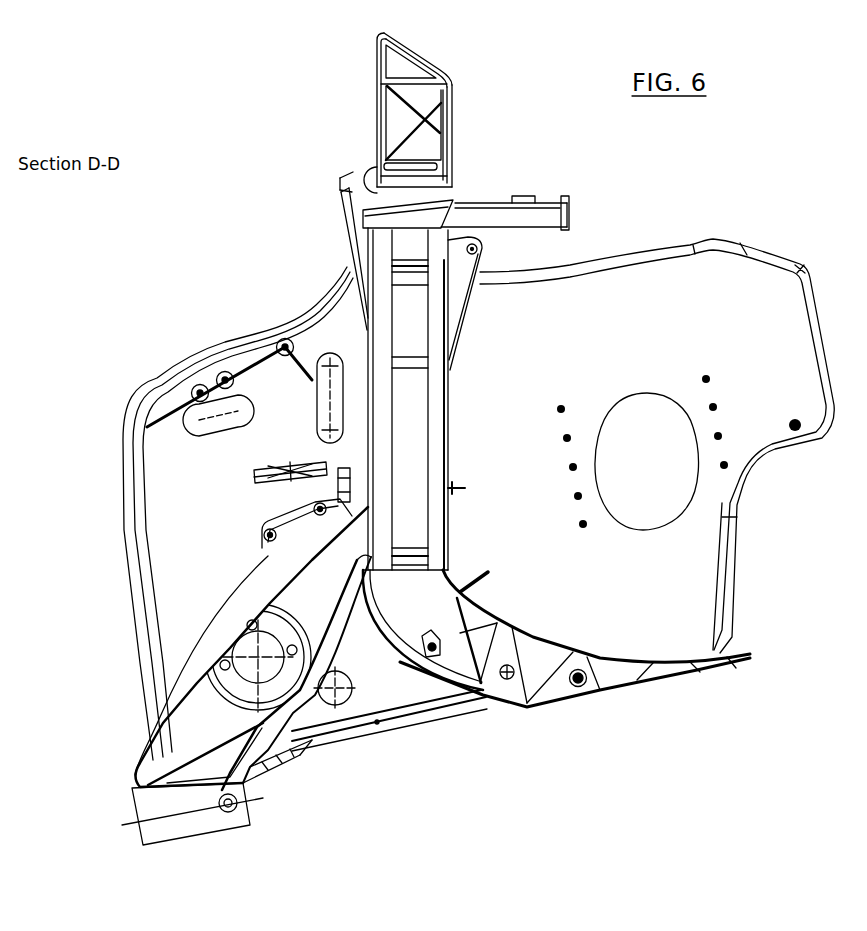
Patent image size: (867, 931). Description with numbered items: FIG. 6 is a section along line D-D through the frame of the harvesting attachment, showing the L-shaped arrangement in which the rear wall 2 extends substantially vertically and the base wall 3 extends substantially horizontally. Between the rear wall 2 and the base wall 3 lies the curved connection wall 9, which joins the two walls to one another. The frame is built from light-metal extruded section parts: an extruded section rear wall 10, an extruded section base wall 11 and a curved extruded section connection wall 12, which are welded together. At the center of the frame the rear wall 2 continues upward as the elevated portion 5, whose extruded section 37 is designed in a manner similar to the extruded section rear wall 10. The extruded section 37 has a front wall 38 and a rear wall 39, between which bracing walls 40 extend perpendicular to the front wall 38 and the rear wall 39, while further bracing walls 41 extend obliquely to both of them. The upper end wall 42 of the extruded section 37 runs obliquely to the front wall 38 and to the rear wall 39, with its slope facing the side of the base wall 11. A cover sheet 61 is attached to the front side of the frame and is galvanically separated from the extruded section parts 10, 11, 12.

The rear wall 2 is at (509, 369).
The base wall 3 is at (608, 729).
The elevated portion 5 is at (327, 58).
The curved connection wall 9 is at (490, 536).
The extruded section rear wall 10 is at (420, 422).
The extruded section base wall 11 is at (540, 687).
The curved extruded section connection wall 12 is at (393, 637).
The extruded section of the elevated portion 37 is at (393, 130).
The front wall 38 is at (443, 140).
The rear wall 39 is at (378, 115).
The bracing walls 40 is at (408, 77).
The bracing walls 41 is at (417, 108).
The upper end wall 42 is at (417, 50).
The cover sheet 61 is at (537, 633).